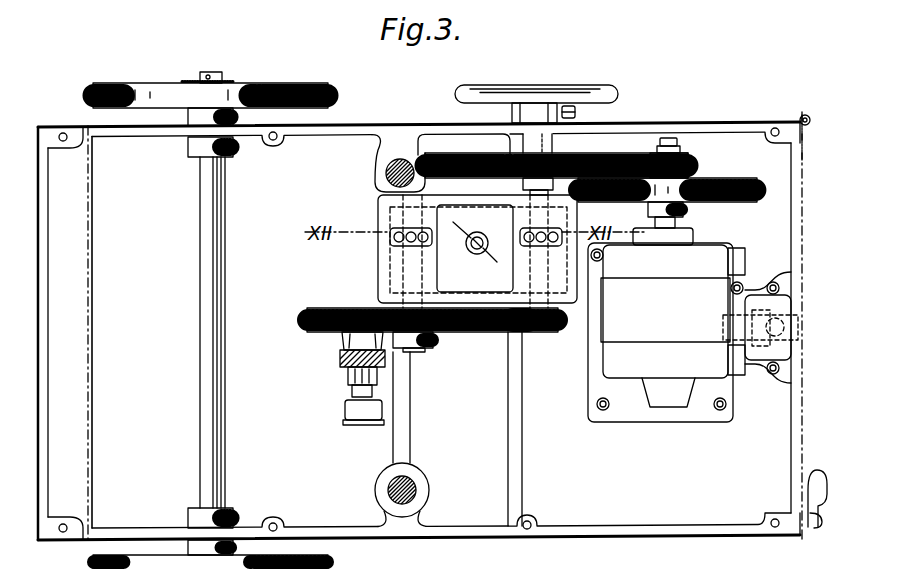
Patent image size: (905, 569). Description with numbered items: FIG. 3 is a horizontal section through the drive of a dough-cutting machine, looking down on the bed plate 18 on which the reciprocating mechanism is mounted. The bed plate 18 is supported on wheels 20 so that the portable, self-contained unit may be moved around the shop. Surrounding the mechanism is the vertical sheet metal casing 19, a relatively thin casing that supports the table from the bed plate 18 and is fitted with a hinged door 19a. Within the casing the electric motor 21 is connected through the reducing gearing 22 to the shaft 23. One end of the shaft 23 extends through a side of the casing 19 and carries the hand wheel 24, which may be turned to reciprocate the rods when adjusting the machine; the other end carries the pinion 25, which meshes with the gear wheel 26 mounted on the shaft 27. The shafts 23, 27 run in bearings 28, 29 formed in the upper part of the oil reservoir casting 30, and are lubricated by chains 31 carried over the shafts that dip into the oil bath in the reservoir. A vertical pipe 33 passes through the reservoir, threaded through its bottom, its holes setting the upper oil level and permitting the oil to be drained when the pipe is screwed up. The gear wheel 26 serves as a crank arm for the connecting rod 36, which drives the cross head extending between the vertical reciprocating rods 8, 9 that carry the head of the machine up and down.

The plunger or rod 8 is at (388, 490).
The plunger or rod 9 is at (386, 175).
The bed plate 18 is at (441, 497).
The vertical sheet metal casing 19 is at (681, 117).
The hinged door 19a is at (806, 160).
The wheels 20 is at (259, 92).
The electric motor 21 is at (693, 325).
The reducing gearing 22 is at (690, 160).
The shaft 23 is at (551, 150).
The hand wheel 24 is at (590, 89).
The pinion 25 is at (545, 334).
The gear wheel 26 is at (476, 335).
The shaft 27 is at (392, 284).
The bearing 28 is at (527, 272).
The bearing 29 is at (428, 280).
The oil reservoir casting 30 is at (378, 257).
The chains 31 is at (397, 228).
The vertical pipe 33 is at (475, 248).
The connecting rod 36 is at (341, 361).